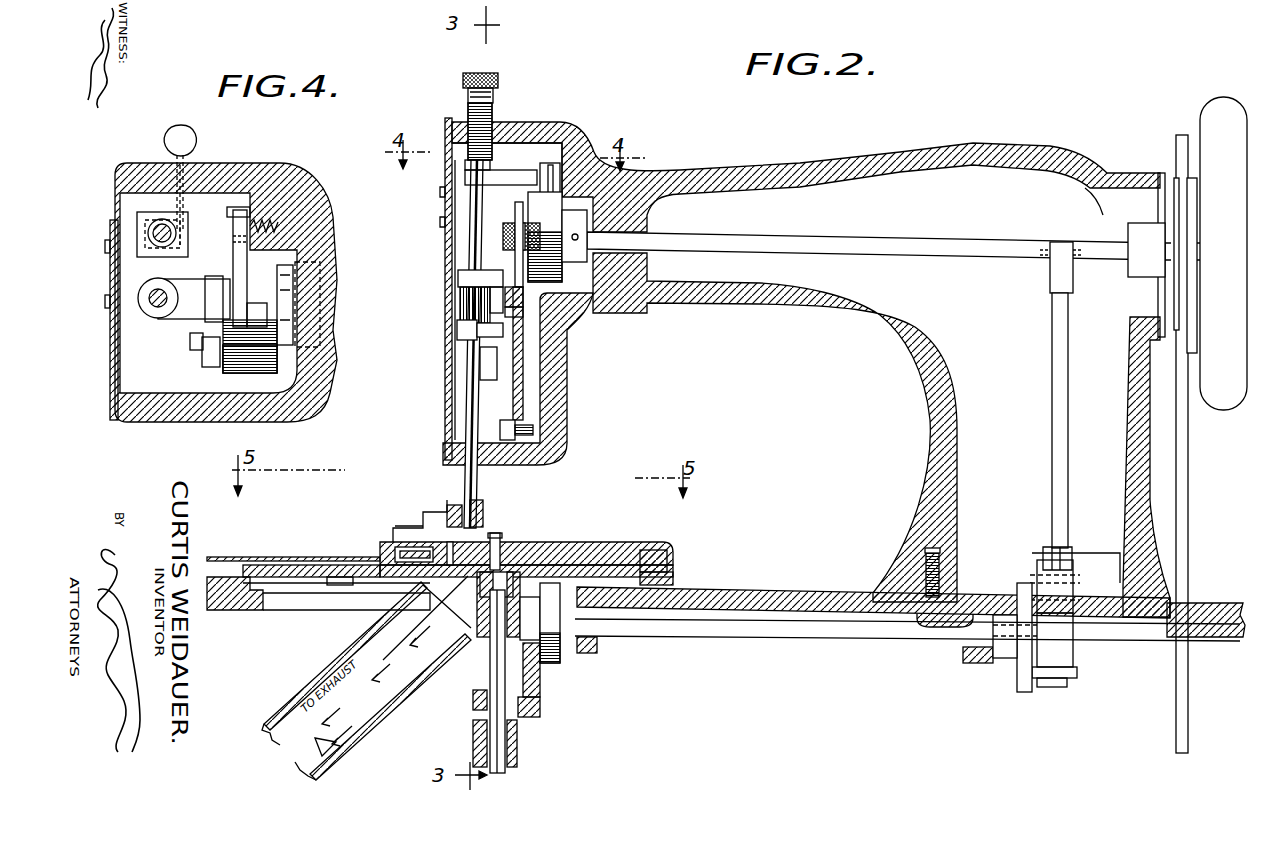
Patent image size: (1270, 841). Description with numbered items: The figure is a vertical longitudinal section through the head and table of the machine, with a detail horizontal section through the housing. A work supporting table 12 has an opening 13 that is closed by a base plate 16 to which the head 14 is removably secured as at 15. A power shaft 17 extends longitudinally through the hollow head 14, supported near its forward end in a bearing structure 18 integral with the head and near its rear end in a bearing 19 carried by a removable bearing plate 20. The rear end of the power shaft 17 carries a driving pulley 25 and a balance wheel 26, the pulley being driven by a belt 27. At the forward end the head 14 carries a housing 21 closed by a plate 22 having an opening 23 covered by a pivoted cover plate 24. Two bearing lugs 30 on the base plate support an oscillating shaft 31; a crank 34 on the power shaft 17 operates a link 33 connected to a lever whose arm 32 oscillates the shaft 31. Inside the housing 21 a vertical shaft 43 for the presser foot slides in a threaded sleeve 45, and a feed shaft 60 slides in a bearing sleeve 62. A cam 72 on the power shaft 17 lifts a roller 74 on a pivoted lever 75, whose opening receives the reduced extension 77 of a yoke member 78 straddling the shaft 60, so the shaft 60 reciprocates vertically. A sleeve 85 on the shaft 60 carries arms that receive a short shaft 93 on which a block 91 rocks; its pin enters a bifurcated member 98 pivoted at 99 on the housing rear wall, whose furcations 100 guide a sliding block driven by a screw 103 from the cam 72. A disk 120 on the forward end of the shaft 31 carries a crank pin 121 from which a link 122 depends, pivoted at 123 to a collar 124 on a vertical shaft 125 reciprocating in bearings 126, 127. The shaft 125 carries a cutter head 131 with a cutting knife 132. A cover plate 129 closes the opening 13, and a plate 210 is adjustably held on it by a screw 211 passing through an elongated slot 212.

In FIG. 2, the work supporting table 12 is at (1200, 610).
In FIG. 2, the opening 13 is at (300, 603).
In FIG. 2, the head 14 is at (787, 305).
In FIG. 2, the securing means 15 is at (940, 580).
In FIG. 2, the base plate 16 is at (731, 593).
In FIG. 2, the power shaft 17 is at (853, 237).
In FIG. 2, the bearing structure 18 is at (640, 220).
In FIG. 2, the bearing 19 is at (1140, 270).
In FIG. 2, the bearing plate 20 is at (1157, 203).
In FIG. 2, the housing 21 is at (565, 145).
In FIG. 2, the plate 22 is at (447, 340).
In FIG. 2, the opening 23 is at (455, 222).
In FIG. 2, the cover plate 24 is at (457, 237).
In FIG. 2, the driving pulley 25 is at (1178, 187).
In FIG. 2, the balance wheel 26 is at (1217, 107).
In FIG. 2, the belt 27 is at (1180, 457).
In FIG. 2, the bearing lugs 30 is at (970, 665).
In FIG. 2, the shaft 31 is at (695, 630).
In FIG. 2, the arm 32 is at (1060, 652).
In FIG. 2, the link 33 is at (1052, 458).
In FIG. 2, the crank 34 is at (1047, 277).
In FIG. 4, the vertical shaft 43 is at (150, 230).
In FIG. 2, the threaded sleeve 45 is at (463, 85).
In FIG. 4, the shaft 60 is at (160, 313).
In FIG. 2, the shaft 60 is at (470, 406).
In FIG. 2, the bearing sleeve 62 is at (494, 122).
In FIG. 4, the cam 72 is at (280, 373).
In FIG. 2, the cam 72 is at (560, 275).
In FIG. 4, the roller 74 is at (268, 347).
In FIG. 2, the roller 74 is at (555, 183).
In FIG. 4, the pivoted lever 75 is at (238, 210).
In FIG. 2, the pivoted lever 75 is at (555, 165).
In FIG. 4, the reduced extension 77 is at (248, 300).
In FIG. 4, the yoke member 78 is at (188, 290).
In FIG. 2, the yoke member 78 is at (506, 172).
In FIG. 2, the sleeve 85 is at (467, 297).
In FIG. 2, the block 91 is at (510, 313).
In FIG. 2, the shaft 93 is at (527, 327).
In FIG. 2, the bifurcated member 98 is at (523, 393).
In FIG. 2, the pivot 99 is at (525, 430).
In FIG. 4, the furcations 100 is at (211, 360).
In FIG. 4, the screw 103 is at (197, 340).
In FIG. 2, the screw 103 is at (503, 231).
In FIG. 2, the disk 120 is at (570, 552).
In FIG. 2, the crank pin 121 is at (543, 663).
In FIG. 2, the link 122 is at (541, 690).
In FIG. 2, the pivotal connection 123 is at (540, 712).
In FIG. 2, the collar 124 is at (473, 703).
In FIG. 2, the shaft 125 is at (493, 753).
In FIG. 2, the bearing 126 is at (470, 745).
In FIG. 2, the bearing 127 is at (547, 583).
In FIG. 2, the cover plate 129 is at (672, 582).
In FIG. 2, the cutter head 131 is at (496, 584).
In FIG. 2, the cutting knife 132 is at (500, 570).
In FIG. 2, the plate 210 is at (317, 556).
In FIG. 2, the screw 211 is at (345, 578).
In FIG. 2, the elongated slot 212 is at (353, 565).